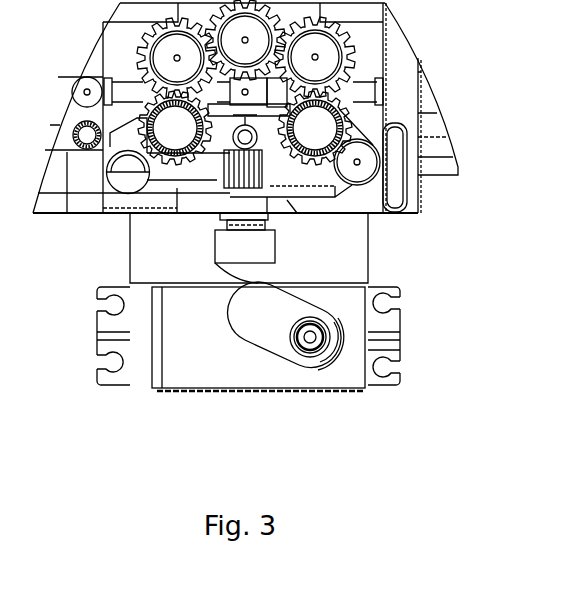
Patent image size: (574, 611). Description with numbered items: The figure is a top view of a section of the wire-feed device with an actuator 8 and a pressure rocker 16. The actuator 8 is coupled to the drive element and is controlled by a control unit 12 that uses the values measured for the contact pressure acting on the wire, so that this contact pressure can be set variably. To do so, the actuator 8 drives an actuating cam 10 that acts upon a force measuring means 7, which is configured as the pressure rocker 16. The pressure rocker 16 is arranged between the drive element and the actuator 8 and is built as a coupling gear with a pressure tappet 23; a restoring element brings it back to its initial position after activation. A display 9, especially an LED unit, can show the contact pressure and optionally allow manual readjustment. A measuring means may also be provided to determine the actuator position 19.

The force measuring means 7 is at (235, 253).
The actuator 8 is at (240, 365).
The display 9 is at (262, 390).
The actuating cam 10 is at (272, 330).
The control unit 12 is at (356, 268).
The pressure rocker 16 is at (200, 188).
The actuator position 19 is at (342, 373).
The pressure tappet 23 is at (230, 230).